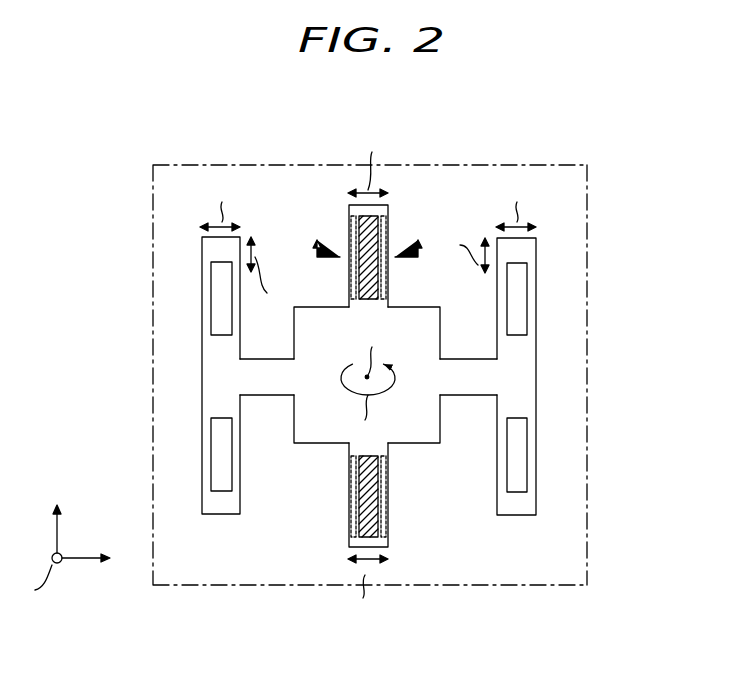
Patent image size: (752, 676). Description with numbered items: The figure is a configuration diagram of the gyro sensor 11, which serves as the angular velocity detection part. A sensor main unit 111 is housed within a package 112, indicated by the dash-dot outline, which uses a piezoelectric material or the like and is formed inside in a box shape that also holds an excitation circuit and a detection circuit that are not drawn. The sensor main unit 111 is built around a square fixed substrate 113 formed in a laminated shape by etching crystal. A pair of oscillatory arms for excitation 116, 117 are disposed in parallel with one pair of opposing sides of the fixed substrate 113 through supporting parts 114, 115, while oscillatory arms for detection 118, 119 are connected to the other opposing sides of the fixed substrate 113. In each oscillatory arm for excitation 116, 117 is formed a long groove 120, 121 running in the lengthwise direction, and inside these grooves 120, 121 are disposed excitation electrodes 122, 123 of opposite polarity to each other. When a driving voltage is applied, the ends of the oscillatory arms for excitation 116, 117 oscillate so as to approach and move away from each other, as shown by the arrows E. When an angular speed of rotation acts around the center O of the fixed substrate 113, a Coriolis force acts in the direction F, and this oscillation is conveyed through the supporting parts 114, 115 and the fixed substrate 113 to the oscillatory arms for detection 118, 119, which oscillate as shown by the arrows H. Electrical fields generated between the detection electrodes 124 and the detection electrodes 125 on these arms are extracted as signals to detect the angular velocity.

The gyro sensor 11 is at (468, 155).
The sensor main unit 111 is at (287, 303).
The package 112 is at (587, 203).
The fixed substrate 113 is at (300, 448).
The supporting part 114 is at (267, 397).
The supporting part 115 is at (468, 395).
The oscillatory arm for excitation 116 is at (202, 375).
The oscillatory arm for excitation 117 is at (536, 375).
The oscillatory arm for detection 118 is at (343, 232).
The oscillatory arm for detection 119 is at (347, 505).
The long groove 120 is at (208, 290).
The long groove 121 is at (208, 445).
The excitation electrode 122 is at (220, 324).
The excitation electrode 123 is at (220, 480).
The detection electrode 124 is at (350, 268).
The detection electrode 125 is at (387, 220).